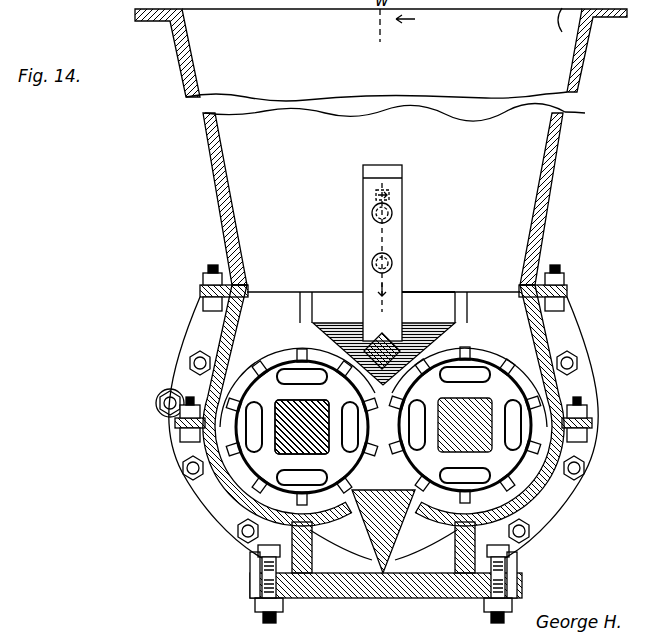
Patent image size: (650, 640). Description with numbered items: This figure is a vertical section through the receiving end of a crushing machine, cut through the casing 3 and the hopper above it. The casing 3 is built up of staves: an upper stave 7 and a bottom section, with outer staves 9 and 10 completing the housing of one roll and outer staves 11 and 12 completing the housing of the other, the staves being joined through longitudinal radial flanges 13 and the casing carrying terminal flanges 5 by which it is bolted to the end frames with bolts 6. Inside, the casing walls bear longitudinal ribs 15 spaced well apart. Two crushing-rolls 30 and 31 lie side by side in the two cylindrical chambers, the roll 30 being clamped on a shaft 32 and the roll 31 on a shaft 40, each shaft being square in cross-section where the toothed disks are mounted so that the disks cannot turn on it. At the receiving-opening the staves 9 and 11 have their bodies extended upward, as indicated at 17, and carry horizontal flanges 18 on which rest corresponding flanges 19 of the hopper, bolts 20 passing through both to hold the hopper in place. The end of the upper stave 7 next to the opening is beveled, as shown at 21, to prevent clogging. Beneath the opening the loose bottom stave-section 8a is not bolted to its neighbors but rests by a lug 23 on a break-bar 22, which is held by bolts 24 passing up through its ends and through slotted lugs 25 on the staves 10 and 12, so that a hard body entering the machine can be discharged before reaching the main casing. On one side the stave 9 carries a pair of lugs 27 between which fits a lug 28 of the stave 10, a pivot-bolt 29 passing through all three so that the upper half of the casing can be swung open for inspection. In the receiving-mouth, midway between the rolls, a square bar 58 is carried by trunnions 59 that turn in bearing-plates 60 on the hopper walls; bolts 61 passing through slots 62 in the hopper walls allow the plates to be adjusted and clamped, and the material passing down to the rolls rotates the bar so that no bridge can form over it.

The casing 3 is at (598, 373).
The terminal flanges 5 is at (200, 330).
The bolts 6 is at (188, 478).
The upper stave 7 is at (422, 322).
The bottom stave section 8a is at (432, 545).
The outer stave 9 is at (263, 330).
The outer stave 10 is at (214, 491).
The outer stave 11 is at (488, 320).
The outer stave 12 is at (550, 500).
The longitudinal radial flanges 13 is at (188, 456).
The longitudinal ribs 15 is at (243, 502).
The upward extension of stave 17 is at (205, 343).
The horizontal flanges 18 is at (200, 297).
The hopper flanges 19 is at (203, 283).
The bolts 20 is at (212, 268).
The beveled end of upper stave 21 is at (337, 320).
The break-bar 22 is at (381, 599).
The lug 23 is at (372, 542).
The bolts 24 is at (263, 614).
The slotted lugs 25 is at (258, 566).
The lugs 27 is at (188, 373).
The lug 28 is at (178, 428).
The pivot-bolt 29 is at (157, 404).
The crushing-roll 30 is at (178, 440).
The crushing-roll 31 is at (594, 380).
The shaft 32 is at (294, 432).
The shaft 40 is at (578, 352).
The bar 58 is at (384, 298).
The trunnions 59 is at (412, 300).
The bearing-plates 60 is at (370, 216).
The bolts 61 is at (373, 259).
The slots 62 is at (403, 197).